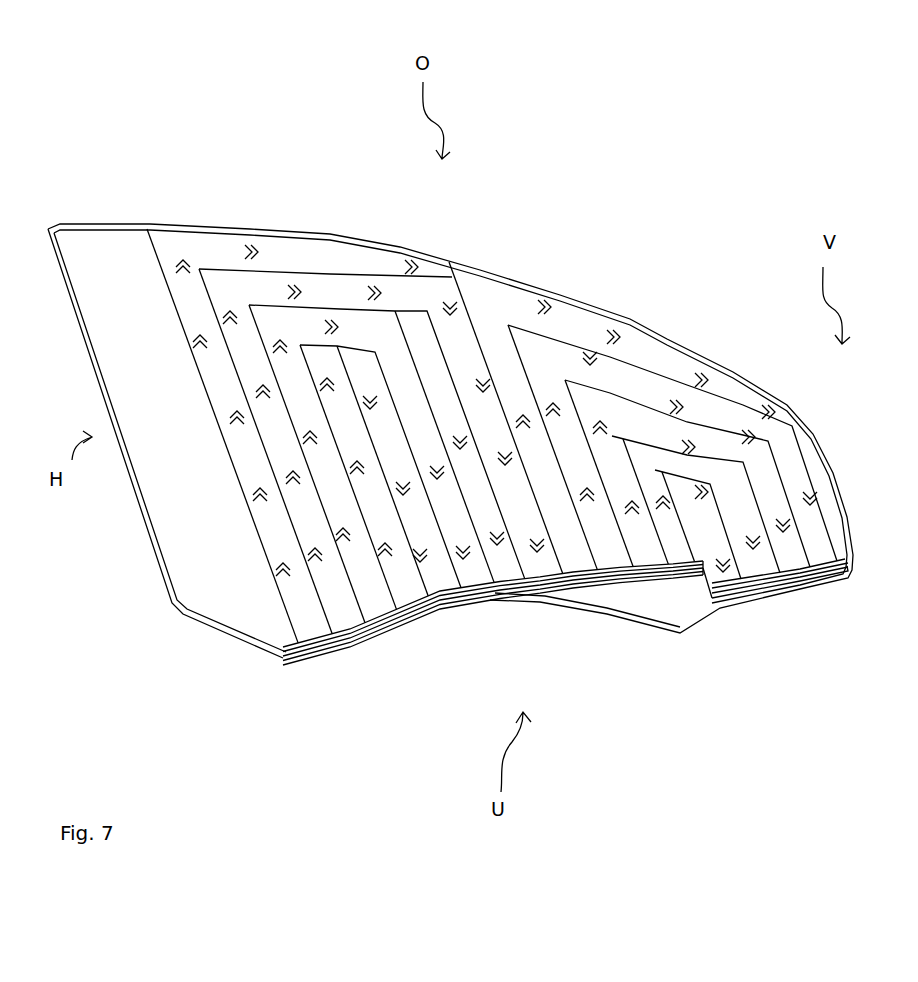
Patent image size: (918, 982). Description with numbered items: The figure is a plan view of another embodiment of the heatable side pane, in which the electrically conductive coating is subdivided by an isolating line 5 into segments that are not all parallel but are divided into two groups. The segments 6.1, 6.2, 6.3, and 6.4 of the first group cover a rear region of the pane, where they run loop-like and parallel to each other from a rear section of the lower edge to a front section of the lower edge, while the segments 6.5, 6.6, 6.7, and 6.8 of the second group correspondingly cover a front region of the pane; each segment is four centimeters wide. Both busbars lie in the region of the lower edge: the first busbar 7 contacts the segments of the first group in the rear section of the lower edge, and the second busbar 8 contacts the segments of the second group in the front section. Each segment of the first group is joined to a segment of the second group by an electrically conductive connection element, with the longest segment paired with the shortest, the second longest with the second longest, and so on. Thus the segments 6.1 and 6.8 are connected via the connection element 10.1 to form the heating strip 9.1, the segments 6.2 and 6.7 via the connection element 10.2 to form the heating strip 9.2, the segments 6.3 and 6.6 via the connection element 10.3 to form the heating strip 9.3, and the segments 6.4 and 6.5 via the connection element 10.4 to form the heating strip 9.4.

The isolating line 5 is at (205, 268).
The segment of the coating 6.1 is at (297, 627).
The segment of the coating 6.2 is at (325, 607).
The segment of the coating 6.3 is at (355, 583).
The segment of the coating 6.4 is at (378, 549).
The segment of the coating 6.5 is at (787, 425).
The segment of the coating 6.6 is at (745, 440).
The segment of the coating 6.7 is at (698, 447).
The segment of the coating 6.8 is at (730, 566).
The first busbar 7 is at (344, 640).
The second busbar 8 is at (770, 587).
The heating strip 9.1 is at (632, 450).
The heating strip 9.2 is at (615, 495).
The heating strip 9.3 is at (600, 545).
The heating strip 9.4 is at (568, 550).
The electrically conductive connection element 10.1 is at (683, 565).
The electrically conductive connection element 10.2 is at (648, 575).
The electrically conductive connection element 10.3 is at (617, 580).
The electrically conductive connection element 10.4 is at (580, 587).